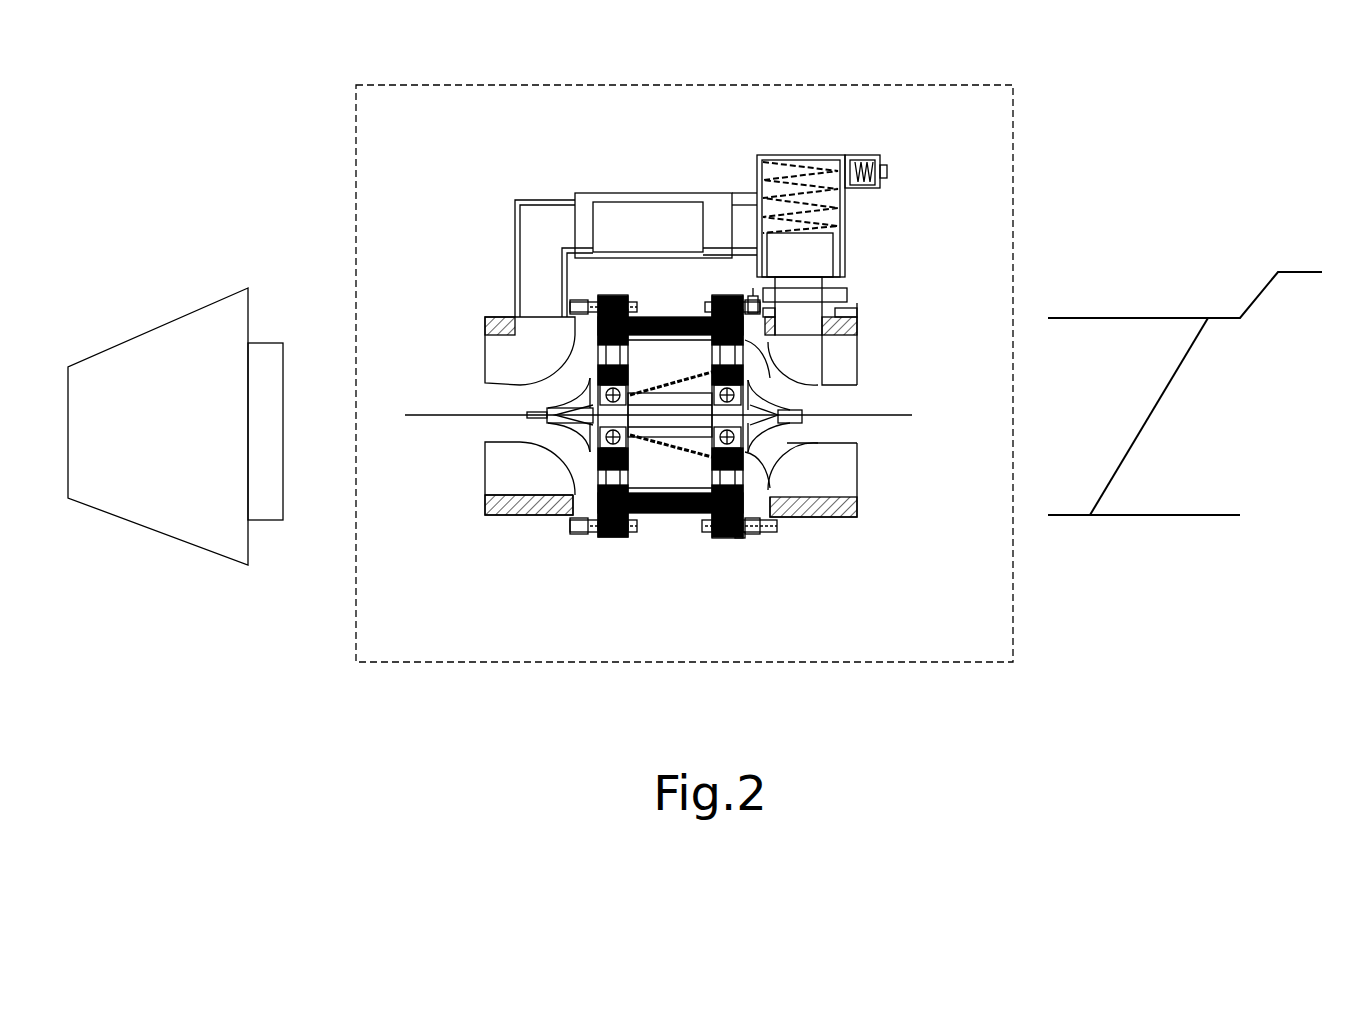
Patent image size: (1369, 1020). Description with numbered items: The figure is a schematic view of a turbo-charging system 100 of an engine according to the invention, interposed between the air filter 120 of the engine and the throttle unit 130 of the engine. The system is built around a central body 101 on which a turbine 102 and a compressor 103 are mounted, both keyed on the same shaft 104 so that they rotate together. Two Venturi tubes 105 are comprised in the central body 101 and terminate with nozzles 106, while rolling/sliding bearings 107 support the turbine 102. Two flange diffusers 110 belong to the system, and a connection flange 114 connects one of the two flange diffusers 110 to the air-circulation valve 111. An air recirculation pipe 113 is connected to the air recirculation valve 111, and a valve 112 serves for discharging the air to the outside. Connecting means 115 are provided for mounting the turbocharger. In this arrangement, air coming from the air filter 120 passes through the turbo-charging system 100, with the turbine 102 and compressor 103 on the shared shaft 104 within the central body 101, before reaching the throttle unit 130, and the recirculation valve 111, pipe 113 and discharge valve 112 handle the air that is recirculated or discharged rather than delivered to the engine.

The turbo-charging system 100 is at (360, 185).
The central body 101 is at (658, 513).
The turbine 102 is at (790, 401).
The compressor 103 is at (545, 410).
The shaft 104 is at (845, 422).
The Venturi tubes 105 is at (655, 360).
The nozzles 106 is at (727, 395).
The rolling/sliding bearings 107 is at (728, 392).
The flange diffusers 110 is at (488, 513).
The air-circulation valve 111 is at (762, 192).
The valve for discharging the air to the outside 112 is at (877, 163).
The air recirculation pipe 113 is at (620, 200).
The connection flange 114 is at (855, 300).
The connecting means 115 is at (738, 537).
The air filter 120 is at (173, 332).
The throttle unit 130 is at (1262, 297).